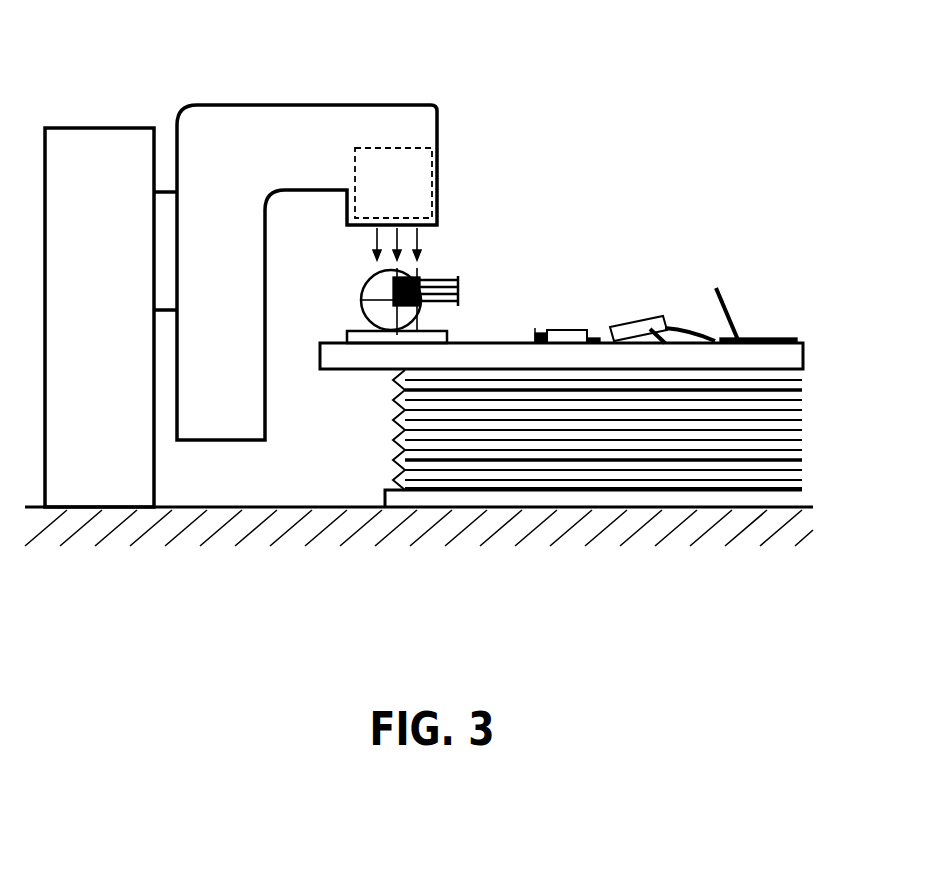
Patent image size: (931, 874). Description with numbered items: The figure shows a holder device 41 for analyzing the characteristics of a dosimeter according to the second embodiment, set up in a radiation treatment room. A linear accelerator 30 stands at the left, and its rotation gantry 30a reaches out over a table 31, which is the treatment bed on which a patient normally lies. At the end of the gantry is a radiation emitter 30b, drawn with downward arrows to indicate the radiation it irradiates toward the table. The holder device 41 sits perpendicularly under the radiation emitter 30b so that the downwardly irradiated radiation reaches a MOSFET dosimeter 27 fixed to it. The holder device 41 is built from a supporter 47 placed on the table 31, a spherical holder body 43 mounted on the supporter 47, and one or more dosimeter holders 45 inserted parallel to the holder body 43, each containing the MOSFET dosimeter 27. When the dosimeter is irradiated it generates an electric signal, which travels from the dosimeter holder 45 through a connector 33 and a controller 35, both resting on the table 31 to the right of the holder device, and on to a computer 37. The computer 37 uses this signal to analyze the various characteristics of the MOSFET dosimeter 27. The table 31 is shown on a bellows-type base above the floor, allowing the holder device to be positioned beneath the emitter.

The linear accelerator 30 is at (207, 90).
The rotation gantry 30a is at (340, 118).
The radiation emitter 30b is at (437, 183).
The holder device 41 is at (364, 280).
The spherical holder body 43 is at (383, 309).
The dosimeter holder 45 is at (420, 280).
The MOSFET dosimeter 27 is at (449, 281).
The supporter 47 is at (448, 336).
The table 31 is at (357, 365).
The connector 33 is at (567, 337).
The controller 35 is at (642, 322).
The computer 37 is at (728, 302).